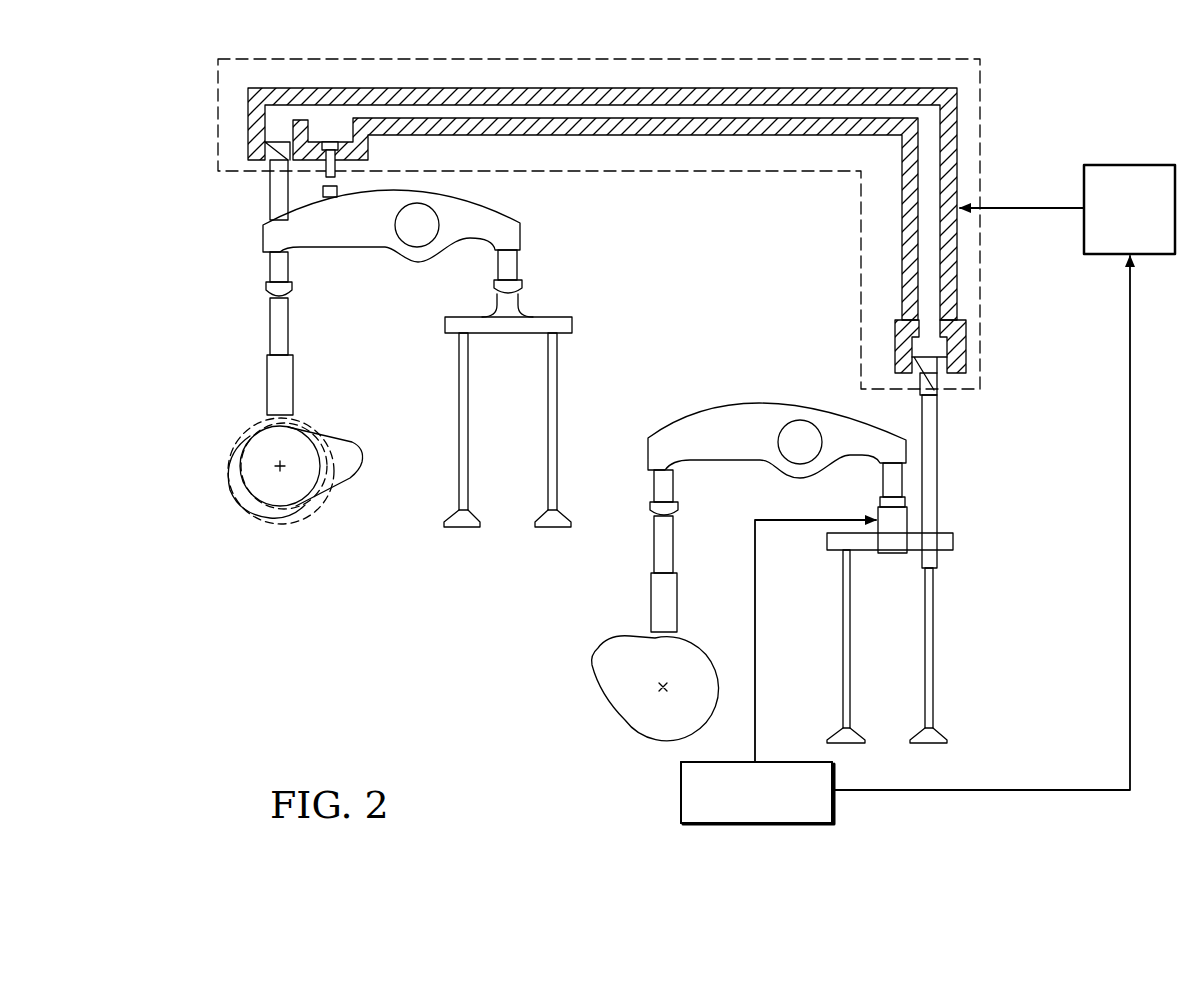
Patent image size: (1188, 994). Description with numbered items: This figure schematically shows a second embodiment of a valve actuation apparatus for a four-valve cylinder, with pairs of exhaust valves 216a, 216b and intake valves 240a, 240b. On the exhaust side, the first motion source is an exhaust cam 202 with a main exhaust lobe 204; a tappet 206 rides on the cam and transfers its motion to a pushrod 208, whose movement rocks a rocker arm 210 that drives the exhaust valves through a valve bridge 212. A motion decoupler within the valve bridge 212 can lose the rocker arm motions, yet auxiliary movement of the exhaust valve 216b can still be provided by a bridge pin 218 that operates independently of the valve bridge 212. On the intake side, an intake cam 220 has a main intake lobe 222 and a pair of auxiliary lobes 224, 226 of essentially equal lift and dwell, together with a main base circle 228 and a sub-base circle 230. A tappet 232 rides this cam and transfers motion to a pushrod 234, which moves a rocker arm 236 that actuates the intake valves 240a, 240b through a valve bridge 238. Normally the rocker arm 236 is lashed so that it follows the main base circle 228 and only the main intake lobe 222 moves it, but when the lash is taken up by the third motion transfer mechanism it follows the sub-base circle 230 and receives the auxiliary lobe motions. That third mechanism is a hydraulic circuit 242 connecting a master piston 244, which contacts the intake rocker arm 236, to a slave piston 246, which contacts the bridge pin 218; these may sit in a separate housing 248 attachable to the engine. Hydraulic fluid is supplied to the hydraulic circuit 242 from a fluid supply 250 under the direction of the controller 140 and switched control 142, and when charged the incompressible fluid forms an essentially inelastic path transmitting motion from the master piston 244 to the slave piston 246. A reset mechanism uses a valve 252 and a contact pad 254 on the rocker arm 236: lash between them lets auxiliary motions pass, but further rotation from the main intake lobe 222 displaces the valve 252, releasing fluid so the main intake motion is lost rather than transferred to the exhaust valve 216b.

The controller 140 is at (834, 782).
The switched control 142 is at (756, 792).
The exhaust cam 202 is at (600, 731).
The main exhaust lobe 204 is at (590, 650).
The tappet 206 is at (650, 605).
The pushrod 208 is at (652, 550).
The rocker arm 210 is at (720, 400).
The valve bridge 212 is at (955, 540).
The exhaust valve 216a is at (843, 590).
The exhaust valve 216b is at (932, 625).
The bridge pin 218 is at (937, 485).
The intake cam 220 is at (273, 490).
The main intake lobe 222 is at (360, 440).
The auxiliary motion lobe 224 is at (232, 460).
The auxiliary motion lobe 226 is at (248, 512).
The main base circle 228 is at (282, 525).
The sub-base circle 230 is at (258, 430).
The tappet 232 is at (295, 390).
The pushrod 234 is at (268, 325).
The rocker arm 236 is at (497, 215).
The valve bridge 238 is at (520, 310).
The intake valve 240a is at (459, 470).
The intake valve 240b is at (548, 480).
The hydraulic circuit 242 is at (740, 137).
The master piston 244 is at (275, 170).
The slave piston 246 is at (935, 385).
The housing 248 is at (820, 59).
The fluid supply 250 is at (1118, 165).
The valve 252 is at (328, 142).
The contact pad 254 is at (332, 200).